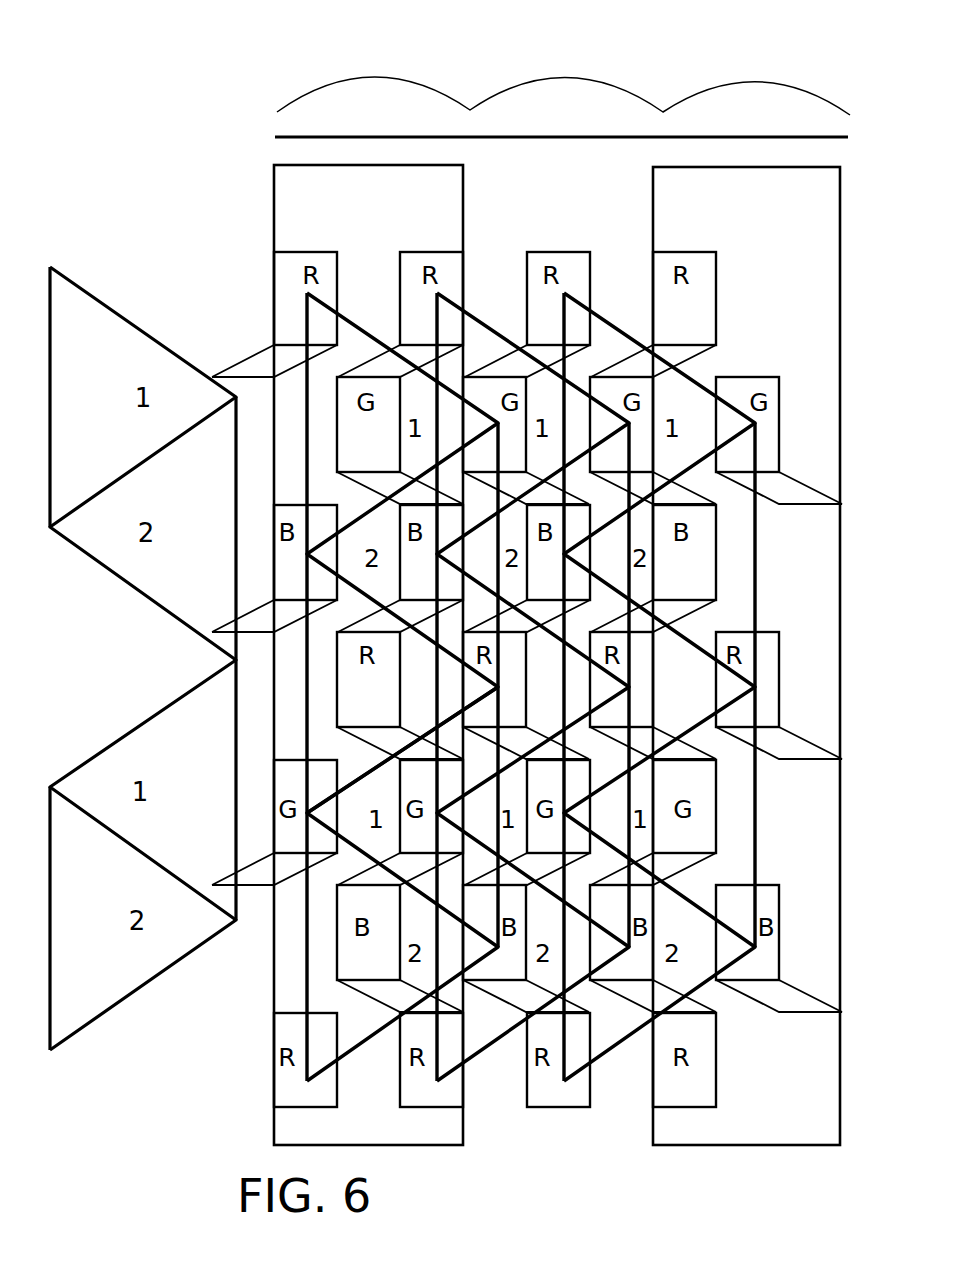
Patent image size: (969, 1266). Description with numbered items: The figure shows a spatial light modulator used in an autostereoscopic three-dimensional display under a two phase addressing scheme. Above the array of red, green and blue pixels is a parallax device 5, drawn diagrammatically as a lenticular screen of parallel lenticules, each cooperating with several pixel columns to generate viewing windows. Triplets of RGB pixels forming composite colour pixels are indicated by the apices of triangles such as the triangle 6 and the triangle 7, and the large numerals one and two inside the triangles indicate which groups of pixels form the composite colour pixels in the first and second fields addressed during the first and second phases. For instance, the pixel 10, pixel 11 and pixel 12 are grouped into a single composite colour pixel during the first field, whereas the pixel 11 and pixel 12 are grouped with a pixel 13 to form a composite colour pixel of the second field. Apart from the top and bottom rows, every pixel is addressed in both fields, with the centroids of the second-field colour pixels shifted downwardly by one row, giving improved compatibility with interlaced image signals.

The parallax device 5 is at (573, 78).
The triangle 6 is at (355, 325).
The triangle 7 is at (370, 768).
The pixel 10 is at (278, 272).
The pixel 11 is at (482, 398).
The pixel 12 is at (280, 559).
The pixel 13 is at (515, 675).